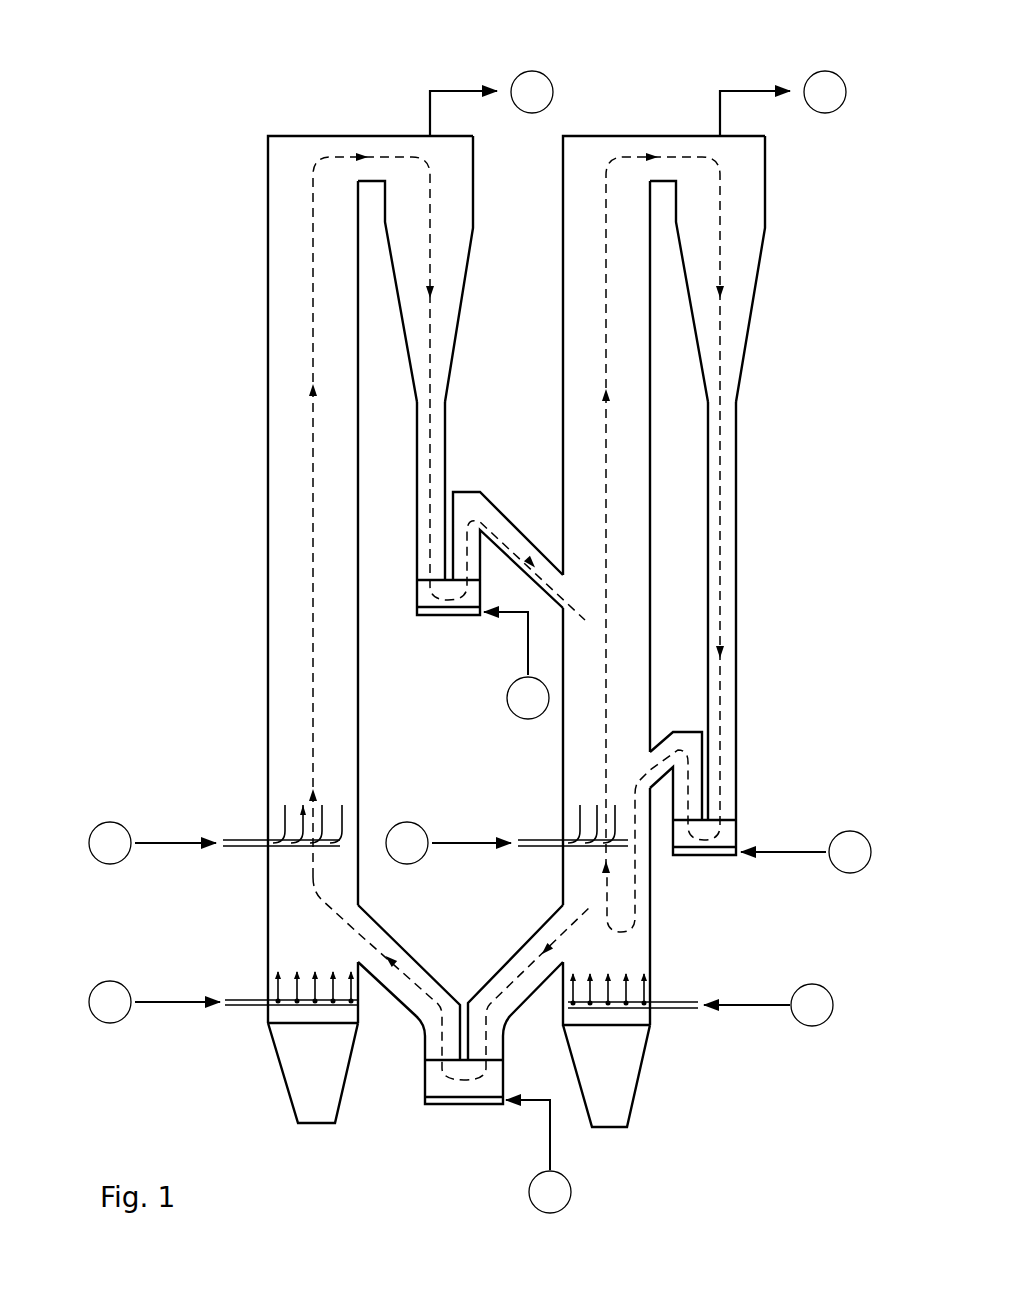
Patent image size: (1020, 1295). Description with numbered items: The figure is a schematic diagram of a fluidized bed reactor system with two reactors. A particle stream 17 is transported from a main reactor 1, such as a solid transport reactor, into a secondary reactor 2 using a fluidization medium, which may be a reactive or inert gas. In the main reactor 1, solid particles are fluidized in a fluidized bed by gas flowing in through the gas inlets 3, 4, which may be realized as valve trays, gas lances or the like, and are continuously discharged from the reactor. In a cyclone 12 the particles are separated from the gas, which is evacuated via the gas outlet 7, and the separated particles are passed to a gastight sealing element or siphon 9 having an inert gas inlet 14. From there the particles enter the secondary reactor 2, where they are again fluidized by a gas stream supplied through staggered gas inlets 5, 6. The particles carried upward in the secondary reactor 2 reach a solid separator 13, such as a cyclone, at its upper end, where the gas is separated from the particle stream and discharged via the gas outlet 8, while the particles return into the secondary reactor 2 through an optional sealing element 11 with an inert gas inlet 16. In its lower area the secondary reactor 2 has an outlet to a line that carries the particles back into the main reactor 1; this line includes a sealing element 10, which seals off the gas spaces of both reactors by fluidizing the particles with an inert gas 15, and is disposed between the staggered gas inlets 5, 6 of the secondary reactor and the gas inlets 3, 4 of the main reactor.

The main reactor 1 is at (265, 644).
The secondary reactor 2 is at (557, 446).
The gas inlet 3 is at (244, 995).
The gas inlet 4 is at (247, 835).
The staggered gas inlet 5 is at (682, 998).
The staggered gas inlet 6 is at (538, 838).
The gas outlet 7 is at (452, 88).
The gas outlet 8 is at (742, 88).
The gastight sealing element (siphon) 9 is at (446, 620).
The sealing element 10 is at (462, 1108).
The sealing element 11 is at (707, 860).
The cyclone 12 is at (461, 319).
The solid separator 13 is at (753, 318).
The inert gas inlet 14 is at (522, 645).
The inert gas 15 is at (543, 1136).
The inert gas inlet 16 is at (795, 858).
The particle stream 17 is at (308, 200).